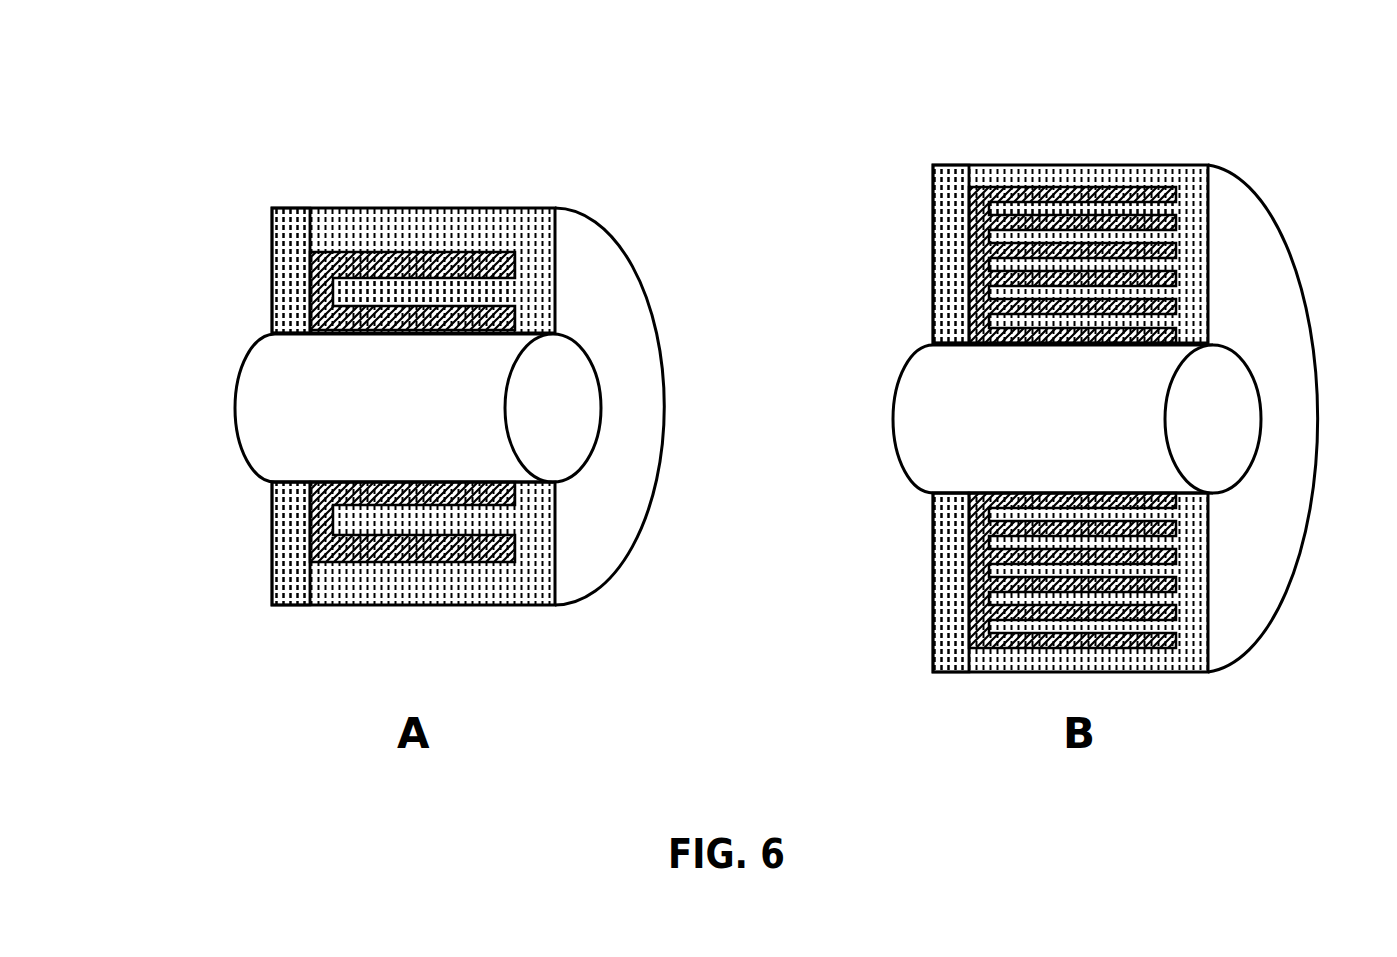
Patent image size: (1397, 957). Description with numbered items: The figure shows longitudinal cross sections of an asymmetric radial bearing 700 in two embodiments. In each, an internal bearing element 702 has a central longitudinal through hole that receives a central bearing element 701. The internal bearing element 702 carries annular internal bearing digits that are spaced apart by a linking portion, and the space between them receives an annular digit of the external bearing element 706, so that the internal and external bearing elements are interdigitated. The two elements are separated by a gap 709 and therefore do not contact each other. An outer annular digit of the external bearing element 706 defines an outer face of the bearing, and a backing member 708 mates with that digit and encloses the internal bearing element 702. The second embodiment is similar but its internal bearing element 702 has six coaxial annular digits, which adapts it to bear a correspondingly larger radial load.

In FIG. 6A, the electrochemical cell assembly 700 is at (557, 161).
In FIG. 6A, the central bearing element 701 is at (288, 393).
In FIG. 6B, the central bearing element 701 is at (945, 404).
In FIG. 6A, the internal bearing element 702 is at (331, 543).
In FIG. 6B, the internal bearing element 702 is at (1158, 216).
In FIG. 6A, the external bearing element 706 is at (464, 225).
In FIG. 6B, the external bearing element 706 is at (1215, 493).
In FIG. 6A, the backing member 708 is at (288, 262).
In FIG. 6B, the backing member 708 is at (923, 493).
In FIG. 6A, the gap 709 is at (365, 253).
In FIG. 6B, the gap 709 is at (1043, 187).